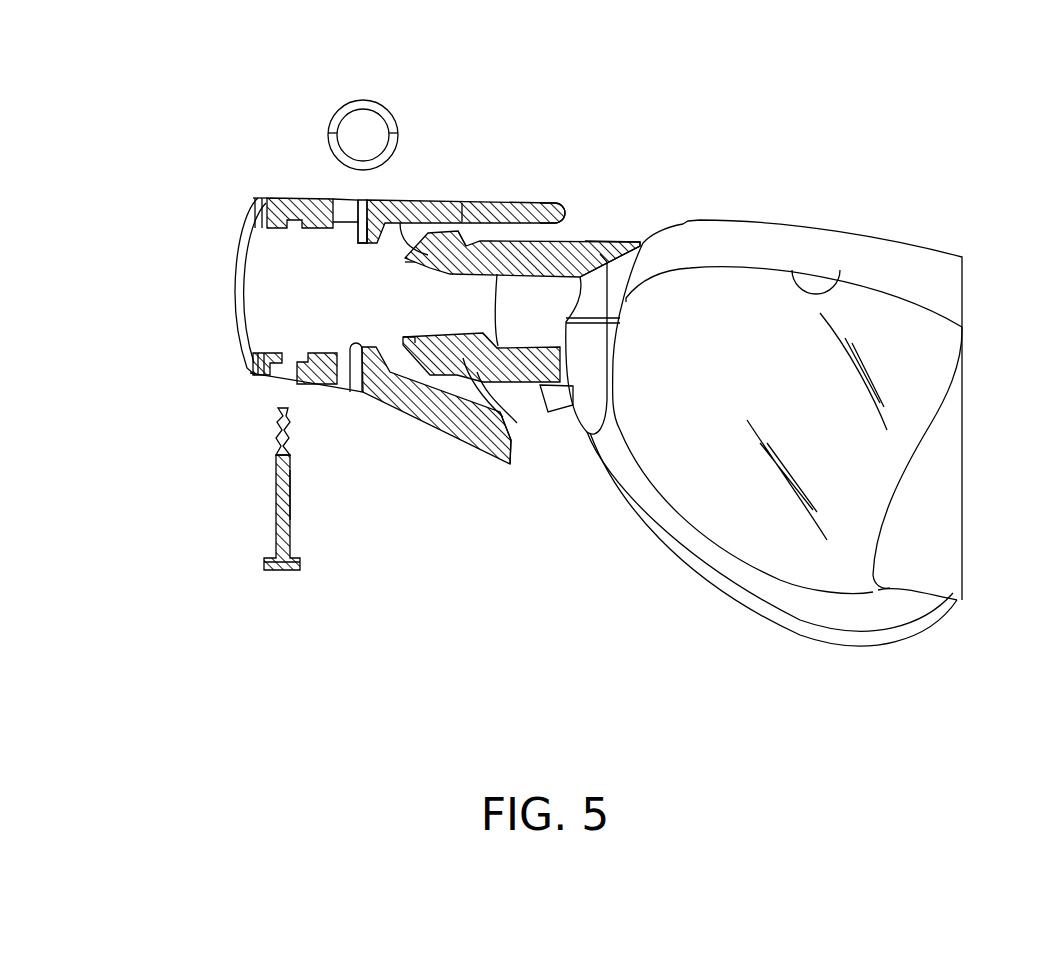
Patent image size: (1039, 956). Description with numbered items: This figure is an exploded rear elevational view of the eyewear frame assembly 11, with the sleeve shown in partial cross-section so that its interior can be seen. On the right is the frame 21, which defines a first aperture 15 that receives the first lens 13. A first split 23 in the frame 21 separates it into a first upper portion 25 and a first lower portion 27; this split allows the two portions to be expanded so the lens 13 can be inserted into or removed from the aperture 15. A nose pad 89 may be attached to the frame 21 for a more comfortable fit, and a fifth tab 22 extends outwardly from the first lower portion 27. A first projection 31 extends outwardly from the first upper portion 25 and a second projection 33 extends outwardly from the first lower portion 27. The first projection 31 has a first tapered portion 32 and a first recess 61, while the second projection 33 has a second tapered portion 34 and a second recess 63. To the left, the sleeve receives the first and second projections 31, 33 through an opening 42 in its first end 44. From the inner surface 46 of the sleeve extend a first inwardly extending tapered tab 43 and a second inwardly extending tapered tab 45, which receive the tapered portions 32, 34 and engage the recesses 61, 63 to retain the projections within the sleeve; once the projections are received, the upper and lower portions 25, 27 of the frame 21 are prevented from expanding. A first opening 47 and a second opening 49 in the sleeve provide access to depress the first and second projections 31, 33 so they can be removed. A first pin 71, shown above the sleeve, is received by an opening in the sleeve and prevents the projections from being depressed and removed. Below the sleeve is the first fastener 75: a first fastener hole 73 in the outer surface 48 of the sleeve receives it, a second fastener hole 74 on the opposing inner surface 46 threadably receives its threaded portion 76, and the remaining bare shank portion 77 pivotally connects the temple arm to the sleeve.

The eyewear frame assembly 11 is at (495, 632).
The first lens 13 is at (737, 533).
The first aperture 15 is at (843, 296).
The frame 21 is at (665, 562).
The fifth tab 22 is at (573, 432).
The first split 23 is at (620, 320).
The first upper portion 25 is at (626, 300).
The first lower portion 27 is at (625, 393).
The first projection 31 is at (589, 241).
The first tapered portion 32 is at (412, 256).
The second projection 33 is at (539, 388).
The second tapered portion 34 is at (405, 352).
The opening 42 is at (512, 455).
The first inwardly extending tapered tab 43 is at (358, 248).
The first end 44 is at (546, 203).
The second inwardly extending tapered tab 45 is at (350, 348).
The inner surface 46 is at (465, 203).
The first opening 47 is at (345, 199).
The outer surface 48 is at (306, 198).
The second opening 49 is at (340, 380).
The first recess 61 is at (485, 233).
The second recess 63 is at (455, 432).
The first pin 71 is at (392, 112).
The first fastener hole 73 is at (288, 380).
The second fastener hole 74 is at (290, 240).
The first fastener 75 is at (272, 540).
The threaded portion 76 is at (276, 426).
The shank portion 77 is at (292, 497).
The nose pad 89 is at (893, 487).